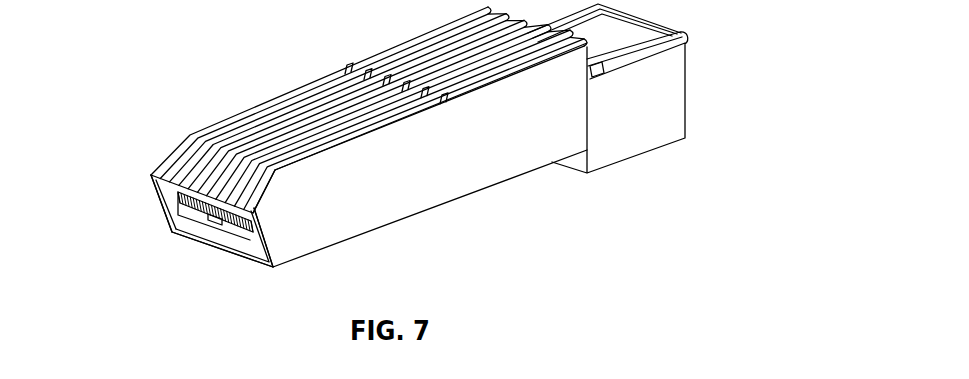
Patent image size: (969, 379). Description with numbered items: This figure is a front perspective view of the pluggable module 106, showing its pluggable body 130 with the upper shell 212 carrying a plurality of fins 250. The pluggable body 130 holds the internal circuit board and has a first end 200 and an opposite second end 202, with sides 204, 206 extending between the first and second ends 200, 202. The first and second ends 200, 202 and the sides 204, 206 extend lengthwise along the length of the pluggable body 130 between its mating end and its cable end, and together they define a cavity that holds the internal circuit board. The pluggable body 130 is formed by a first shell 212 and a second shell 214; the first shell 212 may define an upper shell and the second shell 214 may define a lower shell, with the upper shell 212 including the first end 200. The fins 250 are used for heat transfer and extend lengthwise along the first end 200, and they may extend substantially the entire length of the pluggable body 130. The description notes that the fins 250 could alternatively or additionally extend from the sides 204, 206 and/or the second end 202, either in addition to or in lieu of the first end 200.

The pluggable module 106 is at (255, 43).
The pluggable body 130 is at (492, 161).
The first end 200 is at (208, 195).
The second end 202 is at (244, 258).
The side 204 is at (152, 183).
The side 206 is at (317, 198).
The first shell 212 is at (172, 213).
The second shell 214 is at (218, 233).
The fins 250 is at (218, 136).